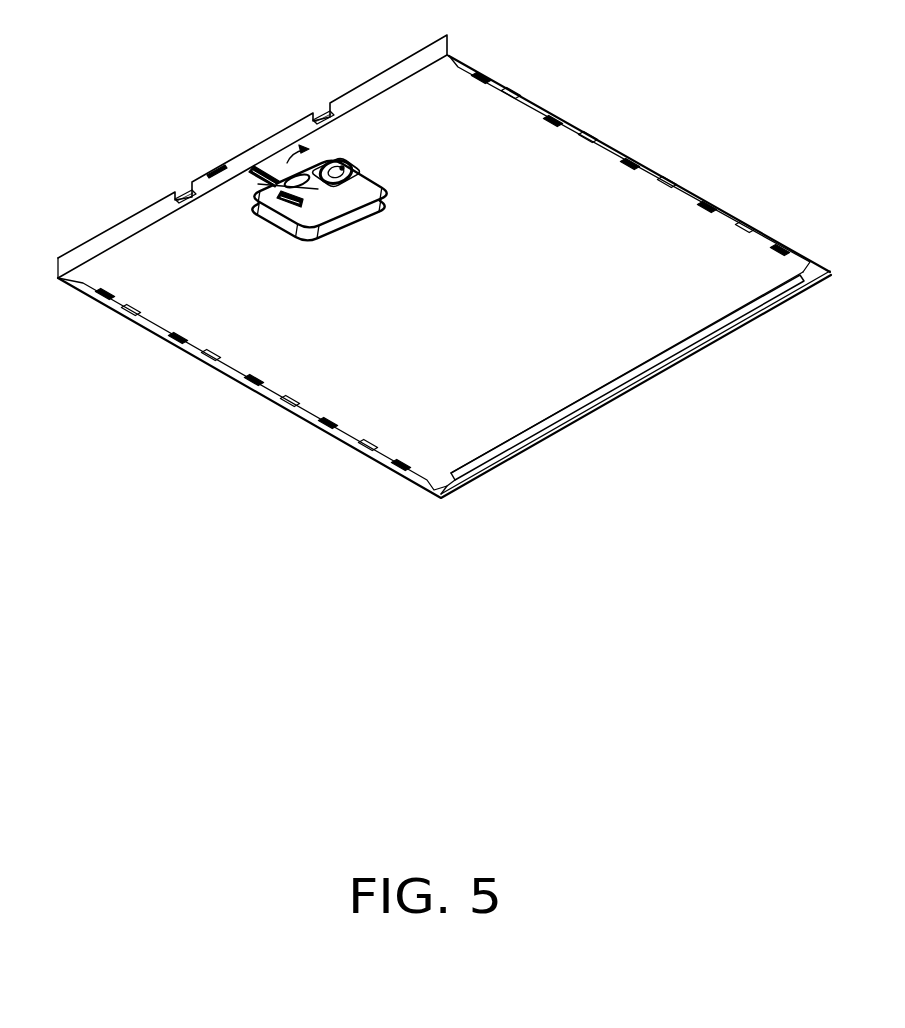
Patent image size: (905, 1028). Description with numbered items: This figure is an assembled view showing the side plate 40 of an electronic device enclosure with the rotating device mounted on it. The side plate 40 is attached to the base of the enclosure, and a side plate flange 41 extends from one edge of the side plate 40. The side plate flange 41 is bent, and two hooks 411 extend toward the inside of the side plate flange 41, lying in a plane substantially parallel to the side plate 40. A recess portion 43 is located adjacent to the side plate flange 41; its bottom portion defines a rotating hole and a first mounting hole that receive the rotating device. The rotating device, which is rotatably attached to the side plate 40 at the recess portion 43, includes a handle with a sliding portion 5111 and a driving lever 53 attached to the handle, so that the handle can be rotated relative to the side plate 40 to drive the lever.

The side plate 40 is at (340, 380).
The side plate flange 41 is at (402, 72).
The hooks 411 is at (183, 195).
The recess portion 43 is at (268, 228).
The driving lever 53 is at (345, 160).
The sliding portion 5111 is at (290, 196).